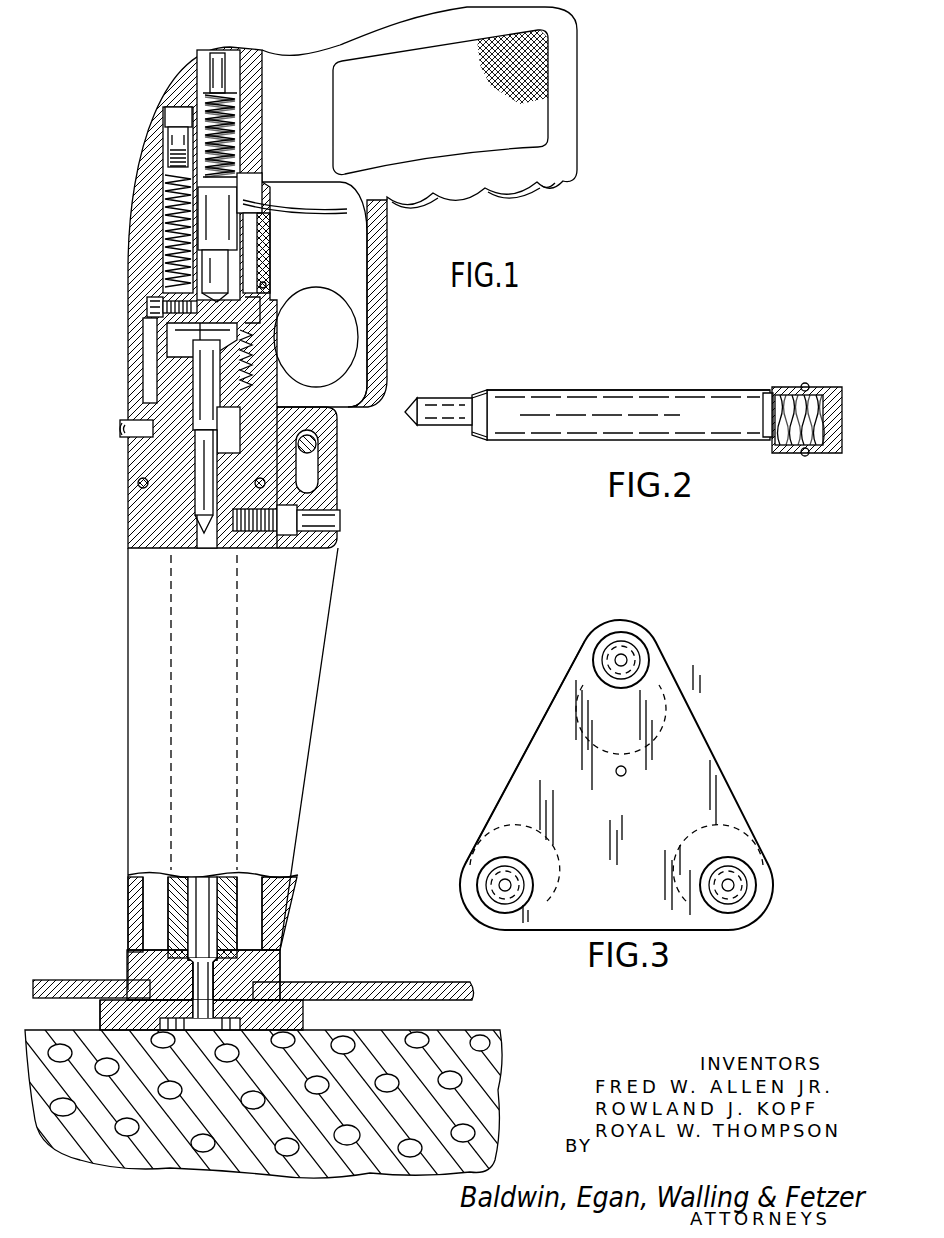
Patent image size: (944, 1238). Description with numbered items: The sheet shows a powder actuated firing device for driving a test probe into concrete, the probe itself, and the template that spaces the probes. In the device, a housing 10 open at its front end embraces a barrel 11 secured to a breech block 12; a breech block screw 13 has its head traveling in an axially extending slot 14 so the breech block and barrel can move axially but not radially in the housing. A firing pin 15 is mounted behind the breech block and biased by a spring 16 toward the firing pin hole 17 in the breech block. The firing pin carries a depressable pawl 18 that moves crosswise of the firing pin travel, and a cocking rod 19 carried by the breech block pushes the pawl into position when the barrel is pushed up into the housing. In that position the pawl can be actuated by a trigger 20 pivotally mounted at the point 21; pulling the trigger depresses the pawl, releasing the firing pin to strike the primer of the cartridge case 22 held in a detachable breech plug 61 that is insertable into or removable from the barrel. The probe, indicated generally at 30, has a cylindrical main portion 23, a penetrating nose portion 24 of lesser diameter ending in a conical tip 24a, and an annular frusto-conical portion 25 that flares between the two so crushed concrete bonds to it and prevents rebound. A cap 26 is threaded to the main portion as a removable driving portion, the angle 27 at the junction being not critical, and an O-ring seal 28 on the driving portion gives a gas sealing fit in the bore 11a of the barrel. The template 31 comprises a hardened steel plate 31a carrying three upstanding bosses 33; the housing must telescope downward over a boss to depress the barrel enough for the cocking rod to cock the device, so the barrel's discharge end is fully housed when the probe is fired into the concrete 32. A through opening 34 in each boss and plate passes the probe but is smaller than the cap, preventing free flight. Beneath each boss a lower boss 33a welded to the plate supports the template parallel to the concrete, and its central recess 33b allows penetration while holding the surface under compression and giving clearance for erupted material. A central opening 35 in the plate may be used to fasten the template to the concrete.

In FIG. 1, the housing 10 is at (283, 897).
In FIG. 1, the barrel 11 is at (233, 897).
In FIG. 1, the bore of the barrel 11a is at (201, 890).
In FIG. 1, the breech block 12 is at (177, 326).
In FIG. 1, the breech block screw 13 is at (147, 309).
In FIG. 1, the axially extending slot 14 is at (152, 357).
In FIG. 1, the firing pin 15 is at (223, 290).
In FIG. 1, the spring 16 is at (223, 118).
In FIG. 1, the firing pin hole 17 is at (262, 306).
In FIG. 1, the depressable pawl 18 is at (254, 220).
In FIG. 1, the cocking rod 19 is at (247, 247).
In FIG. 1, the trigger 20 is at (349, 242).
In FIG. 1, the pivot point 21 is at (266, 284).
In FIG. 1, the cartridge case 22 is at (212, 370).
In FIG. 2, the main portion 23 is at (588, 402).
In FIG. 2, the penetrating nose portion 24 is at (460, 407).
In FIG. 2, the conical tip 24a is at (418, 400).
In FIG. 2, the annular frusto-conical portion 25 is at (480, 423).
In FIG. 2, the cap 26 is at (783, 390).
In FIG. 2, the angle 27 is at (767, 392).
In FIG. 2, the O-ring seal 28 is at (806, 385).
In FIG. 1, the probe 30 is at (193, 462).
In FIG. 2, the probe 30 is at (522, 375).
In FIG. 1, the template 31 is at (340, 983).
In FIG. 3, the template 31 is at (695, 757).
In FIG. 3, the hardened steel plate 31a is at (563, 686).
In FIG. 1, the concrete 32 is at (480, 1060).
In FIG. 1, the upstanding boss 33 is at (250, 958).
In FIG. 3, the upstanding boss 33 is at (632, 652).
In FIG. 1, the lower boss 33a is at (303, 1012).
In FIG. 3, the lower boss 33a is at (683, 683).
In FIG. 1, the central recess 33b is at (100, 1010).
In FIG. 1, the through opening 34 is at (193, 975).
In FIG. 3, the central opening 35 is at (614, 770).
In FIG. 1, the detachable breech plug 61 is at (240, 333).